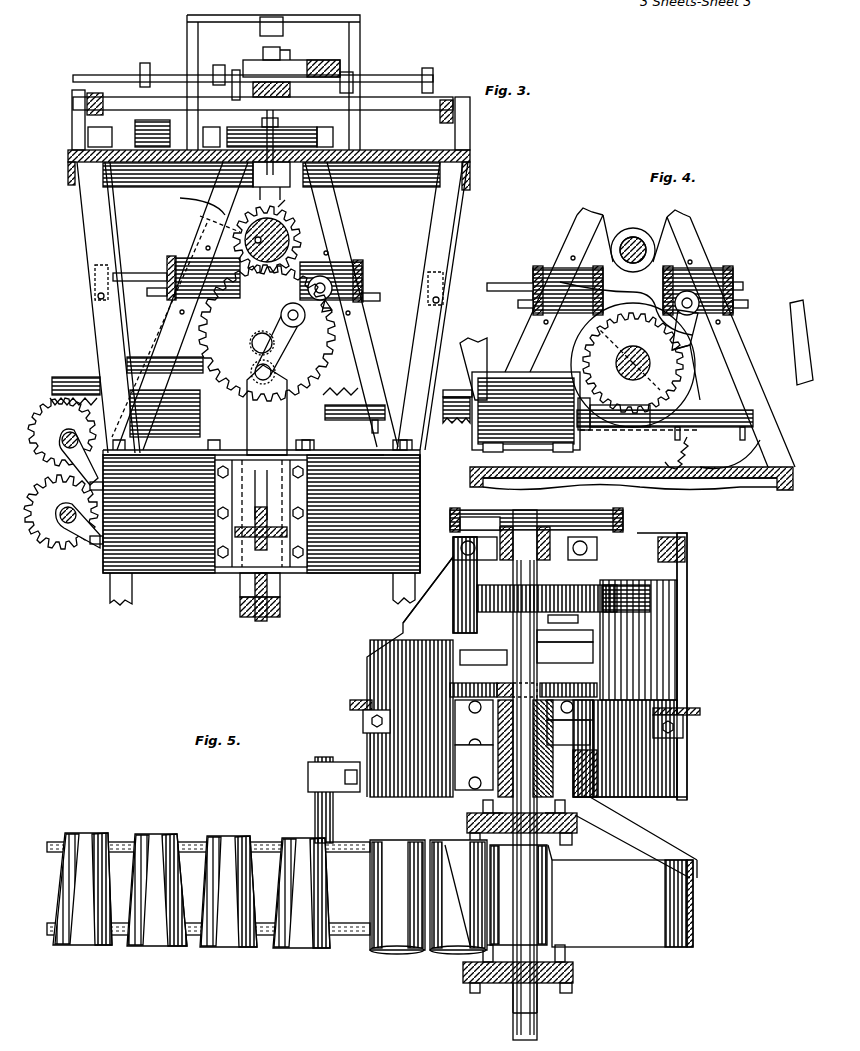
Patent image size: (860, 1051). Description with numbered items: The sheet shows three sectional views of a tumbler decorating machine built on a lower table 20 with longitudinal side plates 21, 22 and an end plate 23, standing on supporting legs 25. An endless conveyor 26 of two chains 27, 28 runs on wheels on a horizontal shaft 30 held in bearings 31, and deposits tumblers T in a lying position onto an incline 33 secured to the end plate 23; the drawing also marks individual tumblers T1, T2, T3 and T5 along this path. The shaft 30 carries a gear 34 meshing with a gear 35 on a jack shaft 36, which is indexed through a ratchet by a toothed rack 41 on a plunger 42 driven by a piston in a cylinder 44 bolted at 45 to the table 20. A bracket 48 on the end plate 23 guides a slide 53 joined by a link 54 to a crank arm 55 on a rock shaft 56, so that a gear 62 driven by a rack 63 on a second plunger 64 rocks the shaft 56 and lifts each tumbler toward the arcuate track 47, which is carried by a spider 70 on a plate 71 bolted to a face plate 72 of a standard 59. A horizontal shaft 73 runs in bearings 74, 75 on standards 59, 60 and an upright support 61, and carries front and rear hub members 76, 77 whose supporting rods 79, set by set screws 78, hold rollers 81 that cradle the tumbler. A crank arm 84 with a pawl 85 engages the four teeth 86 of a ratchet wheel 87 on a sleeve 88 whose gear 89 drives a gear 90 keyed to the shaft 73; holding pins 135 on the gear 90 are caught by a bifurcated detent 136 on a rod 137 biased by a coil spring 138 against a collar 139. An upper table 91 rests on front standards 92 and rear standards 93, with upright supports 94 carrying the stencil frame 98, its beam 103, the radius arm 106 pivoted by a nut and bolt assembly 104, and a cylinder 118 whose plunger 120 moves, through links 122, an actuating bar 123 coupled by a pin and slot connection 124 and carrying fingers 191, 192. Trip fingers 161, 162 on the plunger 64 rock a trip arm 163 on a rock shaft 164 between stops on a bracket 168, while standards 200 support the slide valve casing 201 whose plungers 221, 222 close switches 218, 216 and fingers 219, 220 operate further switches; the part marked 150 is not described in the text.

In FIG. 3, the lower table 20 is at (385, 450).
In FIG. 4, the lower table 20 is at (772, 490).
In FIG. 5, the lower table 20 is at (660, 652).
In FIG. 3, the longitudinal side plate 21 is at (103, 570).
In FIG. 3, the longitudinal side plate 22 is at (425, 486).
In FIG. 4, the longitudinal side plate 22 is at (470, 470).
In FIG. 5, the longitudinal side plate 22 is at (680, 705).
In FIG. 3, the end plate 23 is at (340, 575).
In FIG. 5, the end plate 23 is at (680, 800).
In FIG. 3, the supporting legs 25 is at (112, 608).
In FIG. 5, the supporting legs 25 is at (395, 598).
In FIG. 5, the endless conveyor 26 is at (125, 842).
In FIG. 5, the conveyor chain 27 is at (187, 948).
In FIG. 5, the conveyor chain 28 is at (190, 842).
In FIG. 3, the conveyor shaft 30 is at (62, 520).
In FIG. 5, the conveyor shaft 30 is at (315, 818).
In FIG. 3, the bearings 31 is at (87, 527).
In FIG. 5, the bearings 31 is at (308, 777).
In FIG. 5, the incline 33 is at (430, 887).
In FIG. 3, the gear 34 is at (58, 553).
In FIG. 3, the gear 35 is at (60, 432).
In FIG. 3, the jack shaft 36 is at (73, 448).
In FIG. 3, the toothed rack 41 is at (52, 400).
In FIG. 4, the toothed rack 41 is at (448, 424).
In FIG. 3, the plunger 42 is at (72, 383).
In FIG. 4, the plunger 42 is at (460, 395).
In FIG. 3, the cylinder 44 is at (140, 365).
In FIG. 4, the cylinder 44 is at (455, 388).
In FIG. 5, the cylinder 44 is at (403, 633).
In FIG. 3, the securing bolts 45 is at (195, 462).
In FIG. 4, the securing bolts 45 is at (630, 481).
In FIG. 5, the arcuate track 47 is at (693, 892).
In FIG. 3, the bracket 48 is at (236, 565).
In FIG. 3, the slide 53 is at (240, 448).
In FIG. 3, the link 54 is at (273, 372).
In FIG. 3, the crank arm 55 is at (281, 320).
In FIG. 3, the rock shaft 56 is at (253, 338).
In FIG. 4, the rock shaft 56 is at (633, 366).
In FIG. 3, the standard 59 is at (320, 450).
In FIG. 5, the standard 59 is at (474, 767).
In FIG. 5, the standard 60 is at (474, 725).
In FIG. 3, the upright support 61 is at (320, 288).
In FIG. 4, the upright support 61 is at (560, 282).
In FIG. 5, the upright support 61 is at (493, 515).
In FIG. 4, the gear 62 is at (560, 352).
In FIG. 5, the gear 62 is at (580, 618).
In FIG. 3, the toothed rack 63 is at (340, 384).
In FIG. 4, the toothed rack 63 is at (652, 406).
In FIG. 5, the toothed rack 63 is at (590, 592).
In FIG. 3, the plunger 64 is at (350, 408).
In FIG. 4, the plunger 64 is at (720, 415).
In FIG. 5, the plunger 64 is at (650, 598).
In FIG. 5, the spider 70 is at (672, 852).
In FIG. 5, the plate 71 is at (597, 768).
In FIG. 5, the face plate 72 is at (593, 735).
In FIG. 3, the horizontal shaft 73 is at (295, 240).
In FIG. 4, the horizontal shaft 73 is at (628, 238).
In FIG. 5, the horizontal shaft 73 is at (513, 618).
In FIG. 5, the bearing 74 is at (545, 748).
In FIG. 4, the bearing 75 is at (640, 240).
In FIG. 5, the bearing 75 is at (518, 512).
In FIG. 5, the front hub member 76 is at (500, 985).
In FIG. 5, the rear hub member 77 is at (467, 818).
In FIG. 5, the set screws 78 is at (565, 806).
In FIG. 5, the supporting rods 79 is at (467, 825).
In FIG. 5, the article supporting rollers 81 is at (560, 860).
In FIG. 3, the crank arm 84 is at (338, 280).
In FIG. 4, the crank arm 84 is at (690, 290).
In FIG. 5, the crank arm 84 is at (593, 634).
In FIG. 4, the pawl 85 is at (700, 335).
In FIG. 5, the pawl 85 is at (593, 650).
In FIG. 4, the teeth 86 is at (613, 305).
In FIG. 4, the ratchet wheel 87 is at (693, 372).
In FIG. 5, the ratchet wheel 87 is at (460, 657).
In FIG. 4, the sleeve 88 is at (633, 363).
In FIG. 3, the gear 89 is at (200, 333).
In FIG. 5, the gear 89 is at (597, 685).
In FIG. 3, the gear 90 is at (202, 201).
In FIG. 5, the gear 90 is at (545, 690).
In FIG. 3, the upper table 91 is at (470, 158).
In FIG. 3, the front standards 92 is at (84, 235).
In FIG. 5, the front standards 92 is at (350, 705).
In FIG. 4, the rear standards 93 is at (795, 315).
In FIG. 5, the rear standards 93 is at (685, 551).
In FIG. 3, the upright supports 94 is at (138, 80).
In FIG. 3, the frame 98 is at (94, 93).
In FIG. 3, the supporting beam 103 is at (258, 60).
In FIG. 3, the nut and bolt assembly 104 is at (282, 48).
In FIG. 3, the radius arm 106 is at (340, 62).
In FIG. 3, the stencil screen reciprocating cylinder 118 is at (253, 168).
In FIG. 3, the plunger 120 is at (150, 125).
In FIG. 3, the links 122 is at (145, 63).
In FIG. 3, the actuating bar 123 is at (403, 76).
In FIG. 3, the pin and slot connection 124 is at (292, 52).
In FIG. 3, the holding pins 135 is at (176, 321).
In FIG. 5, the holding pins 135 is at (480, 683).
In FIG. 3, the bifurcated holding detent 136 is at (295, 214).
In FIG. 3, the rod 137 is at (290, 200).
In FIG. 3, the coil spring 138 is at (278, 130).
In FIG. 3, the collar 139 is at (252, 142).
In FIG. 3, the cabinet 150 is at (360, 22).
In FIG. 3, the actuating trip finger 161 is at (400, 470).
In FIG. 4, the actuating trip finger 161 is at (740, 440).
In FIG. 4, the actuating trip finger 162 is at (675, 433).
In FIG. 4, the trip arm 163 is at (730, 470).
In FIG. 5, the rock shaft 164 is at (598, 560).
In FIG. 4, the bracket 168 is at (672, 470).
In FIG. 3, the actuating finger 191 is at (350, 74).
In FIG. 3, the actuating finger 192 is at (215, 66).
In FIG. 3, the standards 200 is at (172, 318).
In FIG. 4, the standards 200 is at (688, 235).
In FIG. 5, the standards 200 is at (458, 510).
In FIG. 3, the valve casing 201 is at (188, 258).
In FIG. 4, the valve casing 201 is at (733, 276).
In FIG. 5, the valve casing 201 is at (575, 512).
In FIG. 3, the switch 216 is at (95, 277).
In FIG. 3, the switch 218 is at (443, 300).
In FIG. 3, the actuating finger 219 is at (283, 90).
In FIG. 3, the actuating finger 220 is at (236, 70).
In FIG. 3, the plunger 221 is at (376, 293).
In FIG. 4, the plunger 221 is at (751, 292).
In FIG. 3, the plunger 222 is at (160, 274).
In FIG. 4, the plunger 222 is at (515, 296).
In FIG. 5, the tumblers T is at (110, 945).
In FIG. 5, the cup T1 is at (325, 950).
In FIG. 5, the cup T2 is at (397, 908).
In FIG. 5, the cup T3 is at (409, 971).
In FIG. 5, the cup T5 is at (547, 885).